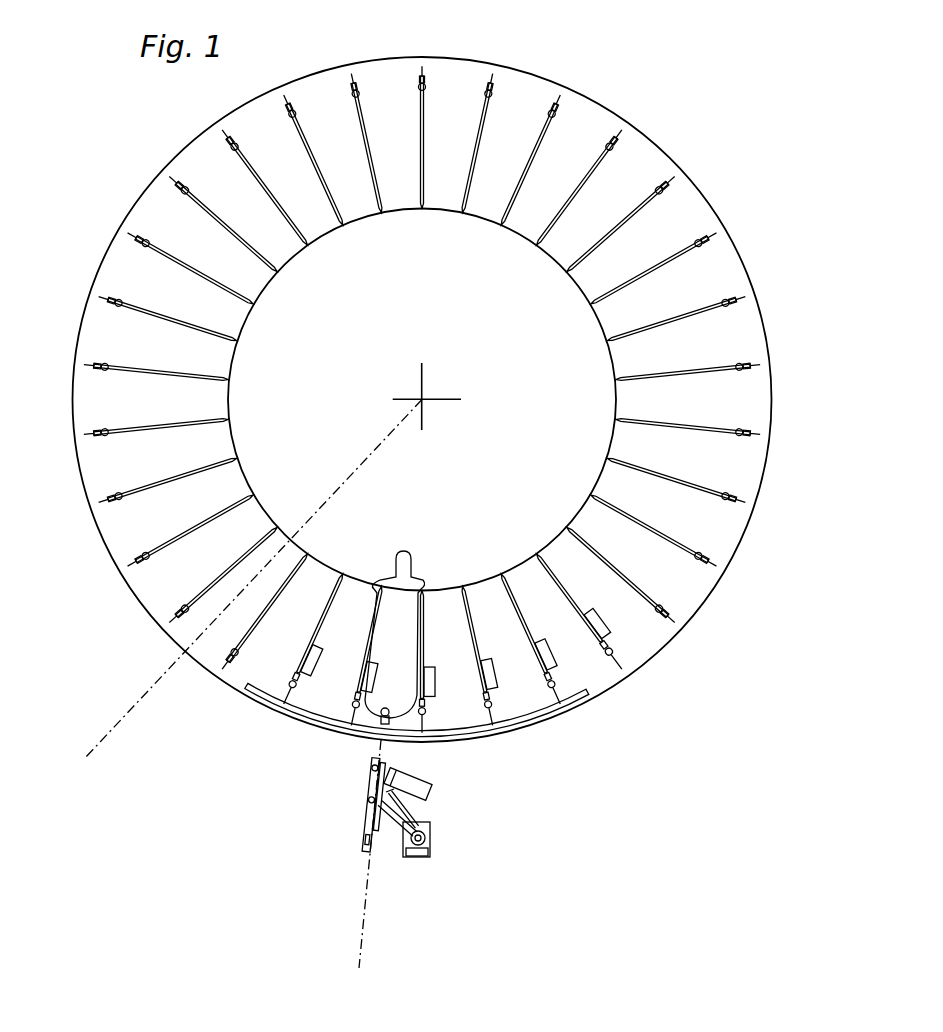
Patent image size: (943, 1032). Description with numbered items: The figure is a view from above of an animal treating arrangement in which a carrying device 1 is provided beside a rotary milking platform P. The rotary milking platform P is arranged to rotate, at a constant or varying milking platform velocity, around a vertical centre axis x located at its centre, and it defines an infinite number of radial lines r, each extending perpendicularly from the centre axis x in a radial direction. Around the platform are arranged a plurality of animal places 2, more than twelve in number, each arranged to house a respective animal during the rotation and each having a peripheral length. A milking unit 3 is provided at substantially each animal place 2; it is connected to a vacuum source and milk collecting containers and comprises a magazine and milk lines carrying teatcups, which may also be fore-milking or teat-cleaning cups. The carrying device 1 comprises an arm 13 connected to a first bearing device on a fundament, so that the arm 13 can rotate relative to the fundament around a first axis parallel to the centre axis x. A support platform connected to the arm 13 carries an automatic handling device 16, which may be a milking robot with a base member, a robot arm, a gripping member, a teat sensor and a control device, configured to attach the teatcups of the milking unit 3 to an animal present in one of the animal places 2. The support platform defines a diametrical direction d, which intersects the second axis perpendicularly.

The carrying device 1 is at (370, 855).
The animal place 2 is at (274, 649).
The milking unit 3 is at (436, 704).
The arm 13 is at (393, 835).
The automatic handling device 16 is at (349, 792).
The rotary milking platform P is at (597, 103).
The centre axis x is at (423, 399).
The radial line r is at (132, 708).
The diametrical direction d is at (365, 893).